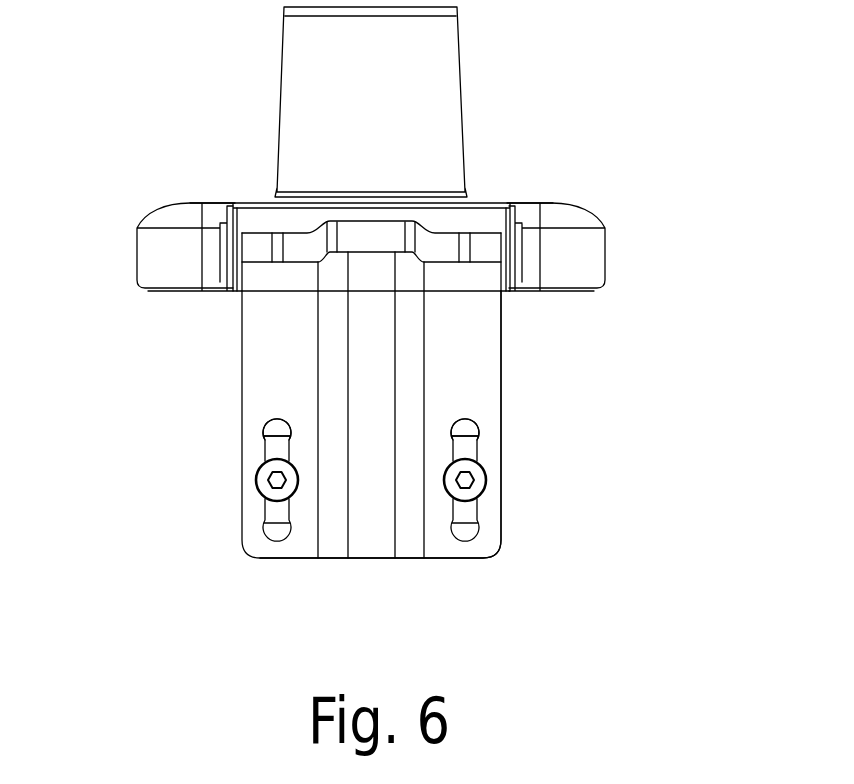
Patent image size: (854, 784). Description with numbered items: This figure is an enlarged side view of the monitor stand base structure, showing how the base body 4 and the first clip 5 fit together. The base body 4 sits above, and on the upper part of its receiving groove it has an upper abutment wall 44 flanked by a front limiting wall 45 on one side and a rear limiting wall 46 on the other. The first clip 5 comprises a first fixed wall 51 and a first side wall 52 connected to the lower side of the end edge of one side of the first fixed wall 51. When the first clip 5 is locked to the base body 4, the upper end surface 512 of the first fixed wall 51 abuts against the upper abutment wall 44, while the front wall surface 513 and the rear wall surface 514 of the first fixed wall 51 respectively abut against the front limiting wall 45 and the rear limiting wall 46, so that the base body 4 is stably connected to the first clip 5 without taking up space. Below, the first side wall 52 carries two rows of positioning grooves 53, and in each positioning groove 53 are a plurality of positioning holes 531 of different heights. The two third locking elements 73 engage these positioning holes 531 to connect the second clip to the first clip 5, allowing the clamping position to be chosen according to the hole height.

The base body 4 is at (491, 200).
The upper abutment wall 44 is at (370, 262).
The front limiting wall 45 is at (505, 260).
The rear limiting wall 46 is at (237, 260).
The first clip 5 is at (512, 317).
The first fixed wall 51 is at (480, 262).
The upper end surface 512 is at (370, 262).
The front wall surface 513 is at (501, 282).
The rear wall surface 514 is at (242, 275).
The first side wall 52 is at (506, 347).
The positioning grooves 53 is at (273, 424).
The positioning holes 531 is at (260, 455).
The third locking elements 73 is at (256, 480).